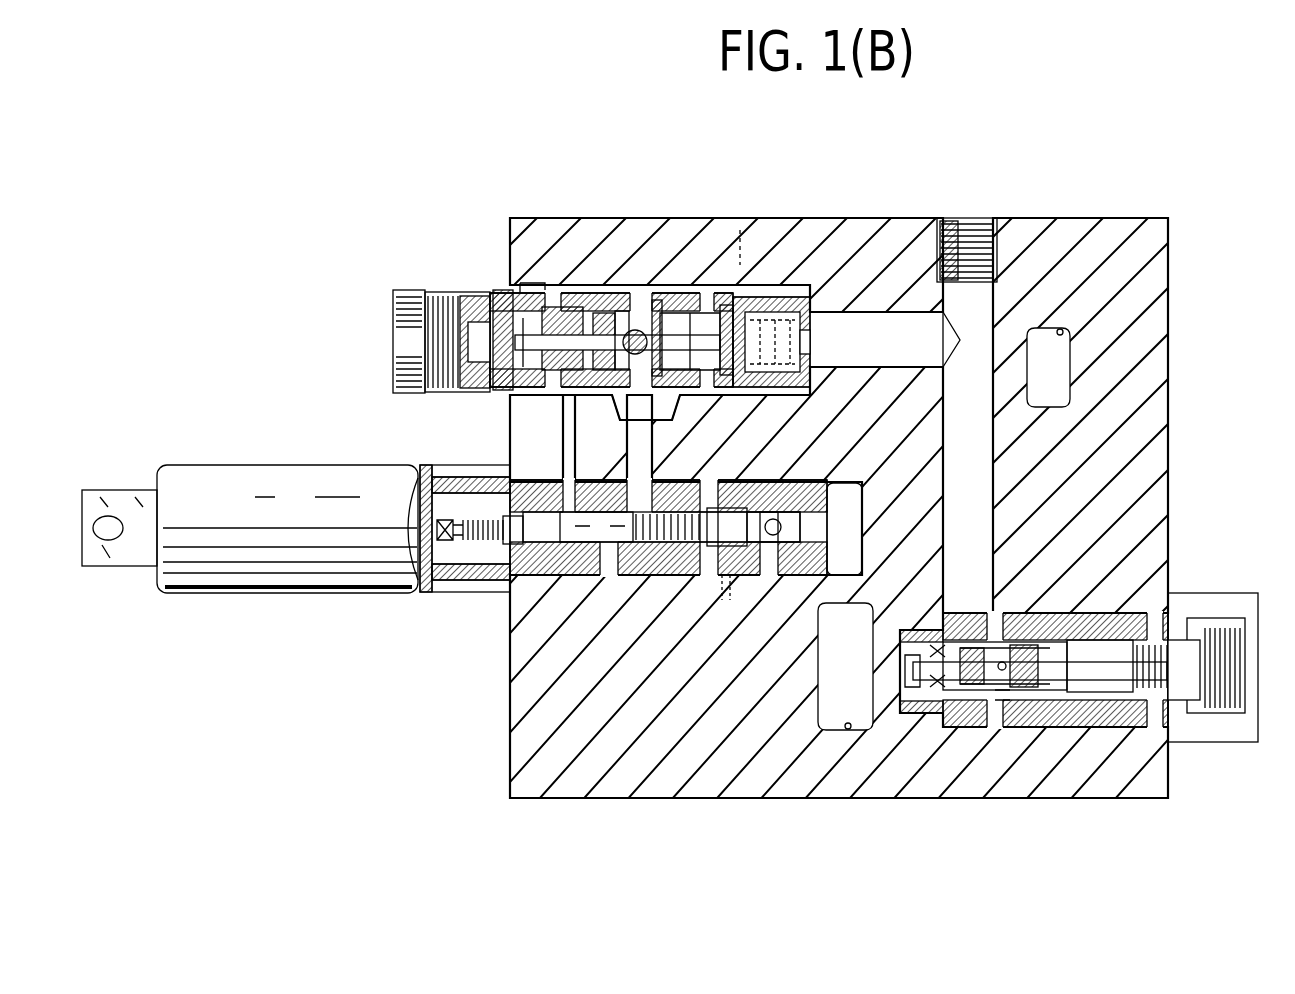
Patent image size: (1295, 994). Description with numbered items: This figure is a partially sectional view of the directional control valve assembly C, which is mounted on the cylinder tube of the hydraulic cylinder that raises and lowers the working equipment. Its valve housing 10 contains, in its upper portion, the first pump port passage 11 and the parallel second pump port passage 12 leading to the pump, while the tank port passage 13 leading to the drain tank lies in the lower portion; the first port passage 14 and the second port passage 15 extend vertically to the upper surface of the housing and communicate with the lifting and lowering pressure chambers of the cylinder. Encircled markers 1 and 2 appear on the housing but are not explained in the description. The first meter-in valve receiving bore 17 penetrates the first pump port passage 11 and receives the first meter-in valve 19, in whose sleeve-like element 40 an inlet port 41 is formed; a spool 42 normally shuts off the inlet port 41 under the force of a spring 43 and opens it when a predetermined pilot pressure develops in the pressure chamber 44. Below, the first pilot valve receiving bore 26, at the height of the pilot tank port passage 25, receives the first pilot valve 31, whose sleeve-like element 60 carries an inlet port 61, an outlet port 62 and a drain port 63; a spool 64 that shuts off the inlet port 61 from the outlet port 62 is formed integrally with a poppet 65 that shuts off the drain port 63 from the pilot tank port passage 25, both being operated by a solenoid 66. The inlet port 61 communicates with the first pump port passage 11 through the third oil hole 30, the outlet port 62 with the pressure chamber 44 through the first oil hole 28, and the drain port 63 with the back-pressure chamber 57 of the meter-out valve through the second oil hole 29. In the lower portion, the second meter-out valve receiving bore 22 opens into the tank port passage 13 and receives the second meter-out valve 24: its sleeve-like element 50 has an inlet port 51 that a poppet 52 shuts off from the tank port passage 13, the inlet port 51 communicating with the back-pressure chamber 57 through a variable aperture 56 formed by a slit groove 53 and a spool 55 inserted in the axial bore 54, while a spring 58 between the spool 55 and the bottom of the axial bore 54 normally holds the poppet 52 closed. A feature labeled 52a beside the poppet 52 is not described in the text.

The first passage 1 is at (723, 230).
The second passage 2 is at (965, 218).
The valve housing 10 is at (896, 230).
The first pump port passage 11 is at (626, 288).
The second pump port passage 12 is at (1060, 330).
The tank port passage 13 is at (850, 732).
The first port passage 14 is at (986, 222).
The second port passage 15 is at (740, 258).
The first meter-in valve receiving bore 17 is at (575, 290).
The first meter-in valve 19 is at (538, 285).
The second meter-out valve receiving bore 22 is at (1140, 720).
The second meter-out valve 24 is at (1125, 596).
The pilot tank port passage 25 is at (862, 472).
The first pilot valve receiving bore 26 is at (606, 490).
The first oil hole 28 is at (555, 420).
The second oil hole 29 is at (724, 585).
The third oil hole 30 is at (654, 430).
The first pilot valve 31 is at (510, 628).
The sleeve-like element 40 is at (675, 292).
The inlet port 41 is at (642, 292).
The spool 42 is at (638, 370).
The spring 43 is at (775, 300).
The pressure chamber 44 is at (490, 333).
The sleeve-like element 50 is at (1030, 712).
The inlet port 51 is at (975, 712).
The poppet 52 is at (915, 712).
The port 52a is at (1000, 712).
The slit groove 53 is at (946, 632).
The axial bore 54 is at (1005, 632).
The spool 55 is at (1117, 666).
The variable aperture 56 is at (978, 632).
The back-pressure chamber 57 is at (1080, 712).
The spring 58 is at (915, 670).
The sleeve-like element 60 is at (712, 490).
The inlet port 61 is at (648, 490).
The outlet port 62 is at (530, 478).
The drain port 63 is at (770, 488).
The spool 64 is at (652, 578).
The poppet 65 is at (748, 578).
The solenoid 66 is at (262, 570).
The directional control valve assembly C is at (1188, 255).